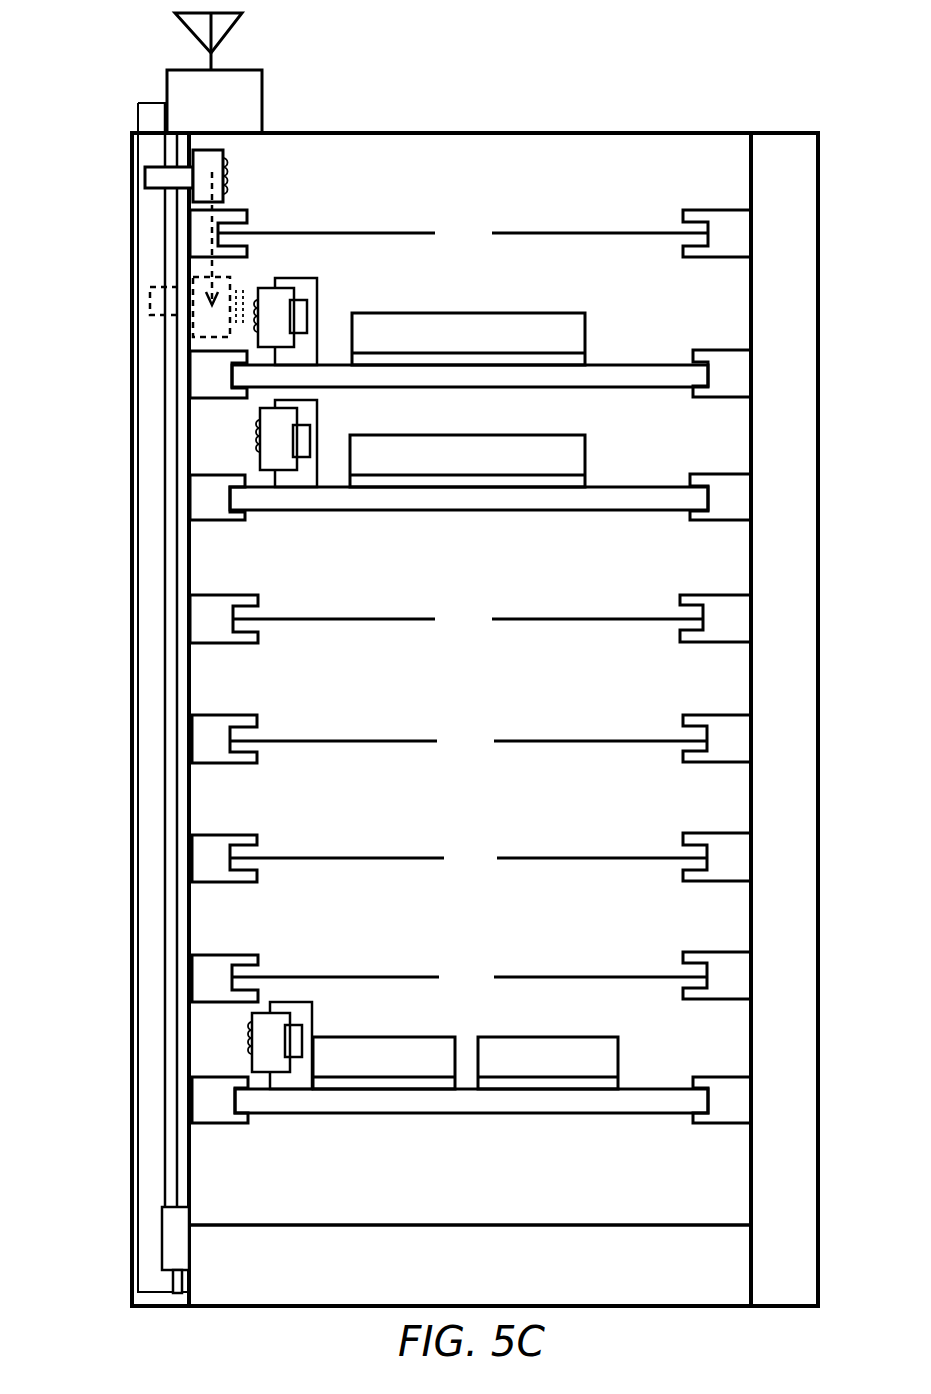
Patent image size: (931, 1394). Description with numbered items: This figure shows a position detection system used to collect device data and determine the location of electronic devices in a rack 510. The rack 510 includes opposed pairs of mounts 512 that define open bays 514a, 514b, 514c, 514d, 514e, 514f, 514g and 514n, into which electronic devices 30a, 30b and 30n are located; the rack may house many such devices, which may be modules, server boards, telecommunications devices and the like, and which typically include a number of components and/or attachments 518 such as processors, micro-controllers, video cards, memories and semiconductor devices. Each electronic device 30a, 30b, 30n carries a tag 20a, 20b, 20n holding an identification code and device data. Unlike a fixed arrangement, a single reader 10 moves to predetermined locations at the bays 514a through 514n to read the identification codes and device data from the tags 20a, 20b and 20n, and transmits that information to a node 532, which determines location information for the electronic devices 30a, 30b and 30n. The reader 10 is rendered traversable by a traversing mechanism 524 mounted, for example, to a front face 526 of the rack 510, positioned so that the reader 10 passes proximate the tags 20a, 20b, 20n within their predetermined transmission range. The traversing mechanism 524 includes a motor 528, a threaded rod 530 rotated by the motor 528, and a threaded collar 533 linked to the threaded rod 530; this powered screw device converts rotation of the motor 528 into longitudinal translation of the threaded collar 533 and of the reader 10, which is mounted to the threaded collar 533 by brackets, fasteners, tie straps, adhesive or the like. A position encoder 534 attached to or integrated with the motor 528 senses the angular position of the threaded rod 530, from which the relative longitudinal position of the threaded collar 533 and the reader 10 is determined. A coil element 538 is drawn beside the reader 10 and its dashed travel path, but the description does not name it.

The rack 510 is at (595, 96).
The mounts 512 is at (745, 251).
The bay 514a is at (463, 234).
The bay 514b is at (705, 368).
The bay 514c is at (690, 492).
The bay 514d is at (468, 620).
The bay 514e is at (468, 742).
The bay 514f is at (468, 859).
The bay 514g is at (469, 978).
The bay 514n is at (705, 1092).
The components and/or attachments 518 is at (484, 348).
The tag 20a is at (318, 283).
The tag 20b is at (318, 420).
The tag 20n is at (313, 1015).
The electronic device 30a is at (668, 363).
The electronic device 30b is at (617, 486).
The electronic device 30n is at (652, 1088).
The node 532 is at (251, 106).
The threaded collar 533 is at (165, 180).
The reader coil unit 538 is at (237, 178).
The reader 10 is at (183, 196).
The threaded rod 530 is at (173, 1140).
The traversing mechanism 524 is at (150, 1198).
The motor 528 is at (172, 1230).
The front face 526 is at (152, 1301).
The position encoder 534 is at (177, 1288).